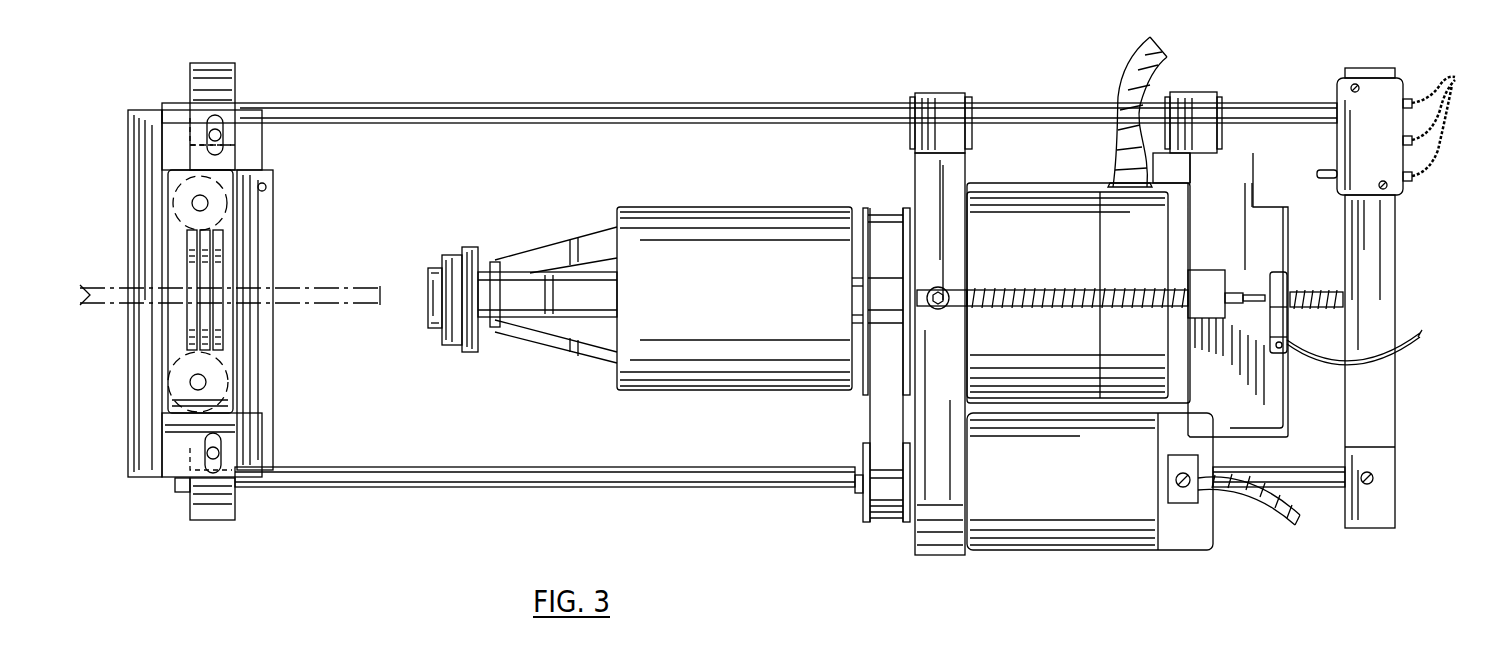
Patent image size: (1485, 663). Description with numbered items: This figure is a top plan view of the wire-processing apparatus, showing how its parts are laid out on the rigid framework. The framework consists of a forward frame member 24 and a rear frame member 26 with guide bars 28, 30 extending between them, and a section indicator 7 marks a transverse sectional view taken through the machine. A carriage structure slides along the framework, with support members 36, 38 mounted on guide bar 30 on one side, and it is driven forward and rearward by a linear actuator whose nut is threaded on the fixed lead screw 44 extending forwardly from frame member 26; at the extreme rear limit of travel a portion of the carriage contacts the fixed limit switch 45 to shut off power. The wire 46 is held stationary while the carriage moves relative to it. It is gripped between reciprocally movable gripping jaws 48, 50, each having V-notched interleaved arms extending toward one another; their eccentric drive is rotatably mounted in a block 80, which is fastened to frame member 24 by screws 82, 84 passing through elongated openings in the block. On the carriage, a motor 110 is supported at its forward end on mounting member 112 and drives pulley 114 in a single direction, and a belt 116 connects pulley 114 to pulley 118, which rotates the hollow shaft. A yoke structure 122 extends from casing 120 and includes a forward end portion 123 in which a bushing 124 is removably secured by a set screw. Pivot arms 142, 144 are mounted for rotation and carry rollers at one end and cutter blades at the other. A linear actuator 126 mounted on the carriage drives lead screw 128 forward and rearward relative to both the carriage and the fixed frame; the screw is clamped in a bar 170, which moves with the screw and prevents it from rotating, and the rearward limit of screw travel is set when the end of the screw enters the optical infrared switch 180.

The section line 7- 7 is at (887, 277).
The forward frame member 24 is at (225, 506).
The rear frame member 26 is at (1385, 510).
The guide bar 28 is at (515, 485).
The guide bar 30 is at (440, 104).
The support member 36 is at (945, 93).
The support member 38 is at (1195, 92).
The fixed lead screw 44 is at (1317, 277).
The fixed limit switch 45 is at (1322, 170).
The wire 46 is at (325, 305).
The gripping jaw 48 is at (172, 185).
The gripping jaw 50 is at (172, 395).
The block 80 is at (140, 430).
The screw 82 is at (222, 135).
The screw 84 is at (222, 453).
The motor 110 is at (1080, 550).
The mounting member 112 is at (948, 337).
The pulley 114 is at (862, 503).
The belt 116 is at (875, 413).
The pulley 118 is at (863, 210).
The casing 120 is at (710, 240).
The yoke structure 122 is at (512, 283).
The forward end portion 123 is at (452, 347).
The bushing 124 is at (430, 325).
The linear actuator 126 is at (1063, 265).
The lead screw 128 is at (1247, 290).
The pivot arm 142 is at (580, 242).
The pivot arm 144 is at (570, 348).
The bar 170 is at (1195, 285).
The optical (IR) switch 180 is at (1287, 328).